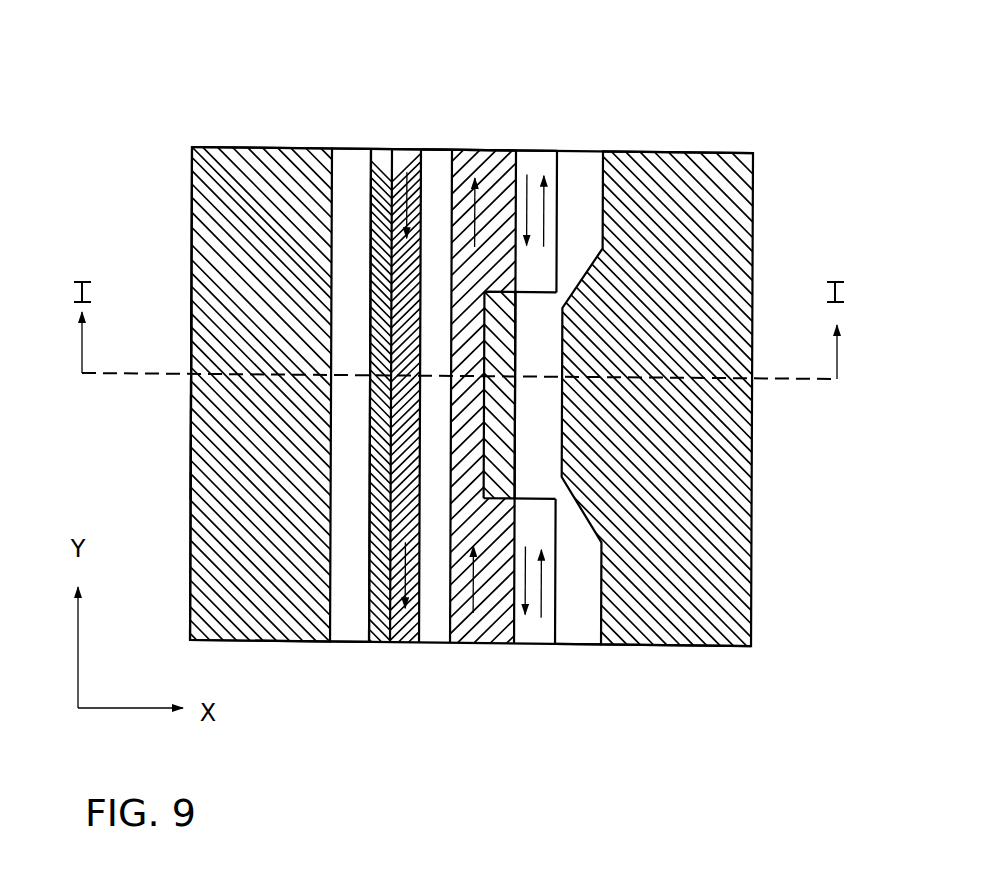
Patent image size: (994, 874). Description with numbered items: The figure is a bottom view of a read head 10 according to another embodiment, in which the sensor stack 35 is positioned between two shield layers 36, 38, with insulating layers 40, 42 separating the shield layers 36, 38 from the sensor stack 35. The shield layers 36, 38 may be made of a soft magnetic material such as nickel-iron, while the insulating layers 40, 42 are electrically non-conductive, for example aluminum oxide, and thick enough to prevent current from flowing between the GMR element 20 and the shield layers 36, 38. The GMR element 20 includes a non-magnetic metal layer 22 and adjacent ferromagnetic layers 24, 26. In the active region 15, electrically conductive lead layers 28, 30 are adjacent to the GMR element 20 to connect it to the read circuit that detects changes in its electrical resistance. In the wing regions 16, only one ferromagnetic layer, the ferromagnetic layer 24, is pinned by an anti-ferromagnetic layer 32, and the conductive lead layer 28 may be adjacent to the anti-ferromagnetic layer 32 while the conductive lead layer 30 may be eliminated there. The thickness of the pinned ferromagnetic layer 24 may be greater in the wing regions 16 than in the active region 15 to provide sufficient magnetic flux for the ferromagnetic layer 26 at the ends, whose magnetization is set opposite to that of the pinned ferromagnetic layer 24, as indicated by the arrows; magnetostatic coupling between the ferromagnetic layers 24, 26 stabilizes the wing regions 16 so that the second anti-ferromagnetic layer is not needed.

The read head 10 is at (669, 58).
The active region 15 is at (191, 434).
The wing regions 16 is at (192, 221).
The GMR element 20 is at (517, 127).
The non-magnetic metal layer 22 is at (433, 643).
The ferromagnetic layer 24 is at (487, 643).
The ferromagnetic layer 26 is at (403, 643).
The electrically conductive lead layer 28 is at (502, 316).
The electrically conductive lead layer 30 is at (377, 183).
The anti-ferromagnetic layer 32 is at (543, 167).
The sensor stack 35 is at (337, 68).
The shield layer 36 is at (740, 518).
The shield layer 38 is at (197, 517).
The insulating layer 40 is at (591, 645).
The insulating layer 42 is at (341, 643).